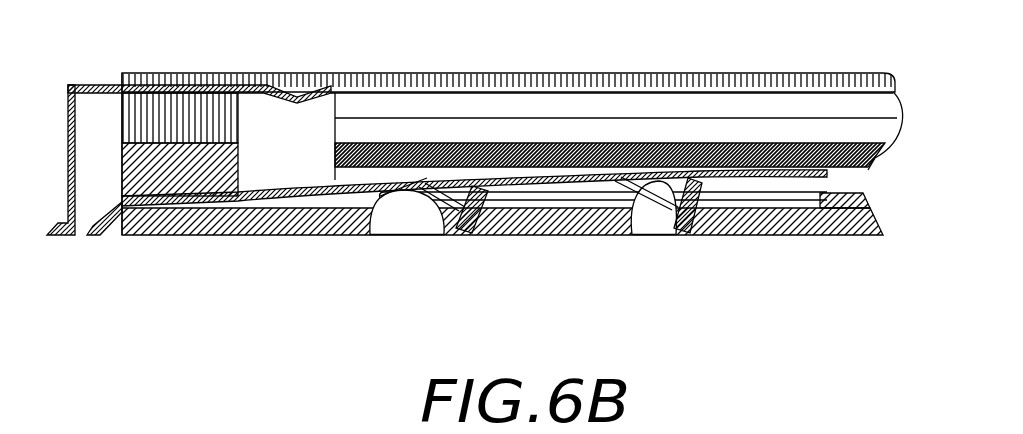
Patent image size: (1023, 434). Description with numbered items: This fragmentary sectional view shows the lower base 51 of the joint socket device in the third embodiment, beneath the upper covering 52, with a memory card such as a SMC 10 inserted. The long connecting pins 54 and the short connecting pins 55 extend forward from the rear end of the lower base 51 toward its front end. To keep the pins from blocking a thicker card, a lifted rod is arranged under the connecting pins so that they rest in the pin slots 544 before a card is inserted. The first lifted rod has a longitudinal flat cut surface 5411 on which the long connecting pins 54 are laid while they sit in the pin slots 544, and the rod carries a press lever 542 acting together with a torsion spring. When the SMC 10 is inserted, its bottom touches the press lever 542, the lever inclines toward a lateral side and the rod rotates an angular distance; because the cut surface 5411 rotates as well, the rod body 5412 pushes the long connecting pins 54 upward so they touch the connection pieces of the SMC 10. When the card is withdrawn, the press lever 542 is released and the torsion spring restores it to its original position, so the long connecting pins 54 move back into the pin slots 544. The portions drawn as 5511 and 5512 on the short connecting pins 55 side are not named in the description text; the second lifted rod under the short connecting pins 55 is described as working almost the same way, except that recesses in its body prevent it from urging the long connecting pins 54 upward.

The SMC 10 is at (870, 167).
The lower base 51 is at (195, 220).
The upper covering 52 is at (895, 88).
The long connecting pins 54 is at (868, 178).
The pin slots 544 is at (823, 202).
The short connecting pins 55 is at (367, 203).
The arcuate portion of first contact arm 5511 is at (445, 222).
The contact tip of first contact arm 5512 is at (487, 207).
The press lever 542 is at (630, 205).
The longitudinal flat cut surface 5411 is at (692, 228).
The rod body 5412 is at (737, 205).